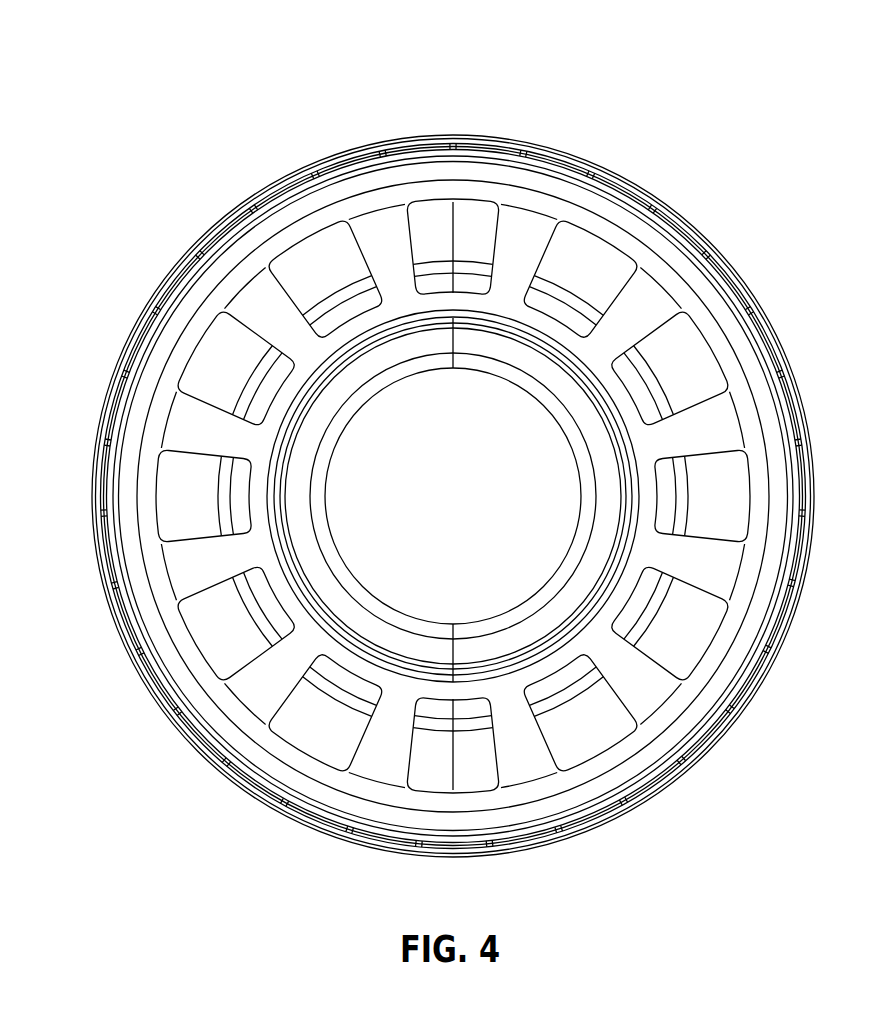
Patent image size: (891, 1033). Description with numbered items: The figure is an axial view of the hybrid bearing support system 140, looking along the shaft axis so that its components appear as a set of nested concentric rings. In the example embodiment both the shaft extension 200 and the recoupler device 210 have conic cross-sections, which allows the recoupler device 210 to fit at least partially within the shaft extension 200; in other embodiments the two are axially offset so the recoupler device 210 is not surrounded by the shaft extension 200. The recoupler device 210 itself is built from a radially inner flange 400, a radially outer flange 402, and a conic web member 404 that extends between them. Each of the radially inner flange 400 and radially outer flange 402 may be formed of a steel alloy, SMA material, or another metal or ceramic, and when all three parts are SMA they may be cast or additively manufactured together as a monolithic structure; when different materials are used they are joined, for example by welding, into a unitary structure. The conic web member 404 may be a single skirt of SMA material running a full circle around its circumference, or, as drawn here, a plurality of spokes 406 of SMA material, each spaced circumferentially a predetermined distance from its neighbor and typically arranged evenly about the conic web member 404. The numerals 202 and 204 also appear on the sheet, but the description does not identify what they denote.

The hybrid bearing support system 140 is at (585, 98).
The shaft extension 200 is at (315, 250).
The central bore 202 is at (310, 445).
The outer housing 204 is at (738, 272).
The recoupler device 210 is at (748, 418).
The radially inner flange 400 is at (453, 318).
The radially outer flange 402 is at (610, 212).
The conic web member 404 is at (400, 260).
The spokes 406 is at (380, 265).